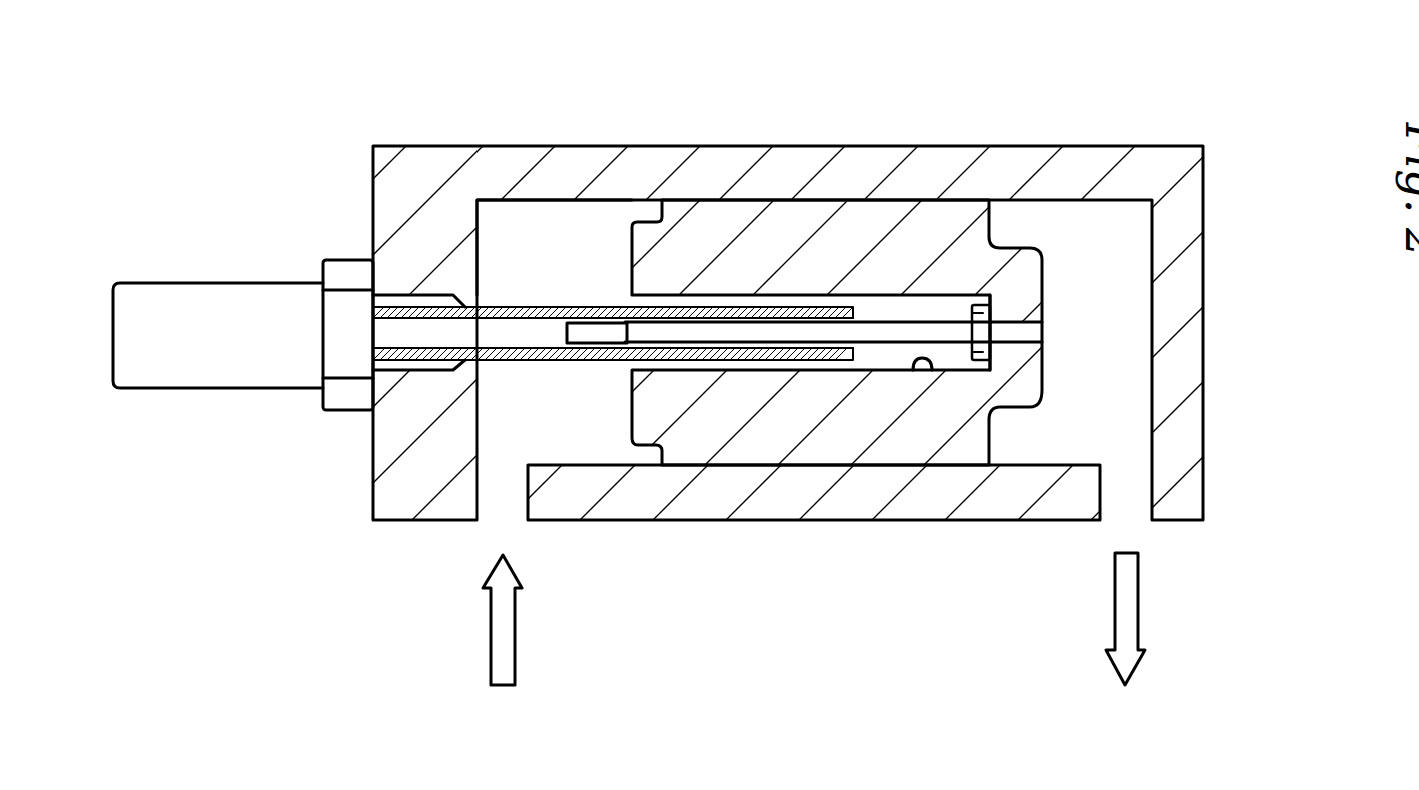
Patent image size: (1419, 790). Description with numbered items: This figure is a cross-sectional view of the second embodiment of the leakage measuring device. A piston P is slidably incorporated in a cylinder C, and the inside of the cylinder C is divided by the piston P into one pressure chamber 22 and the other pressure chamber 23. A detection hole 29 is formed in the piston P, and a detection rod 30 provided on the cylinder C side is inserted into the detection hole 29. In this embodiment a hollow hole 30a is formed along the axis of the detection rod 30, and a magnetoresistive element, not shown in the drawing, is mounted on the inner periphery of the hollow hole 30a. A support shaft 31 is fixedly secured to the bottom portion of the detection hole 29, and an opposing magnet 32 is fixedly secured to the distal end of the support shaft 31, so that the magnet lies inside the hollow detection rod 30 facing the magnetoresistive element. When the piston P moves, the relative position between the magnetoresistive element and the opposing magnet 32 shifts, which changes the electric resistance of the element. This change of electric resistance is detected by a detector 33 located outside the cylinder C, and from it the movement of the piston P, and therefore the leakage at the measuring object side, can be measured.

The pressure chamber 22 is at (1072, 212).
The other pressure chamber 23 is at (619, 208).
The piston P is at (759, 207).
The cylinder C is at (856, 507).
The detection rod 30 is at (763, 363).
The hollow hole 30a is at (538, 326).
The support shaft 31 is at (887, 333).
The opposing magnet 32 is at (597, 333).
The detection hole 29 is at (933, 372).
The detector 33 is at (188, 293).